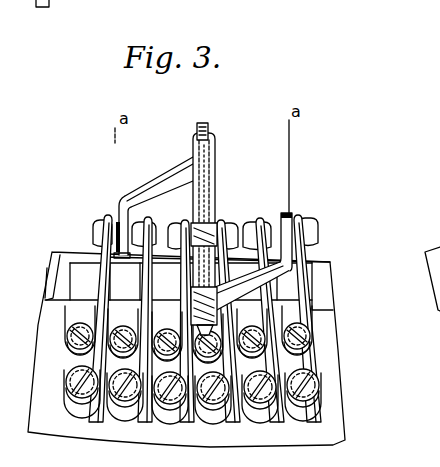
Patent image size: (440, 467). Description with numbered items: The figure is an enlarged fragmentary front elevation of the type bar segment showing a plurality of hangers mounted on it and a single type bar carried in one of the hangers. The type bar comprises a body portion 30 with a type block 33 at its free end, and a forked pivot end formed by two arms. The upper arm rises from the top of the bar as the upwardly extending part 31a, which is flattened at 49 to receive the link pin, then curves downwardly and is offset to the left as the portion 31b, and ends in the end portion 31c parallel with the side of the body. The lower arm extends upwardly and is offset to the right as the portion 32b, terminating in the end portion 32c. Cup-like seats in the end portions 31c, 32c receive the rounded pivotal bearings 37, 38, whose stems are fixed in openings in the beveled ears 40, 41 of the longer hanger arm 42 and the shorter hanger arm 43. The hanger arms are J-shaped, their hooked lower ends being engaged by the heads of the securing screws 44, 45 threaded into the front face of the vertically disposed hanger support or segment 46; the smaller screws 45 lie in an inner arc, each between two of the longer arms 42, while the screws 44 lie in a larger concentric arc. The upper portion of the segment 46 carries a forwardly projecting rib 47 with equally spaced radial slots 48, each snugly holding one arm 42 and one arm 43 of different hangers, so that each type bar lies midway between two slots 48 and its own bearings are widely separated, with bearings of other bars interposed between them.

The body portion 30 is at (192, 303).
The upwardly extending part of arm 31a is at (201, 181).
The downwardly and laterally extending portion of arm 31b is at (147, 199).
The end portion of arm 31c is at (127, 213).
The upwardly and laterally offset portion of arm 32b is at (232, 299).
The end portion of arm 32c is at (290, 217).
The type block 33 is at (217, 229).
The pivotal bearing 37 is at (154, 230).
The pivotal bearing 38 is at (258, 222).
The ear 40 is at (103, 248).
The ear 41 is at (294, 250).
The hanger arm 42 is at (111, 278).
The hanger arm 43 is at (106, 277).
The securing screw 44 is at (84, 397).
The securing screw 45 is at (73, 331).
The hanger support or segment 46 is at (336, 355).
The forwardly projecting rib 47 is at (325, 285).
The radial slot 48 is at (65, 252).
The flattened portion 49 is at (209, 118).